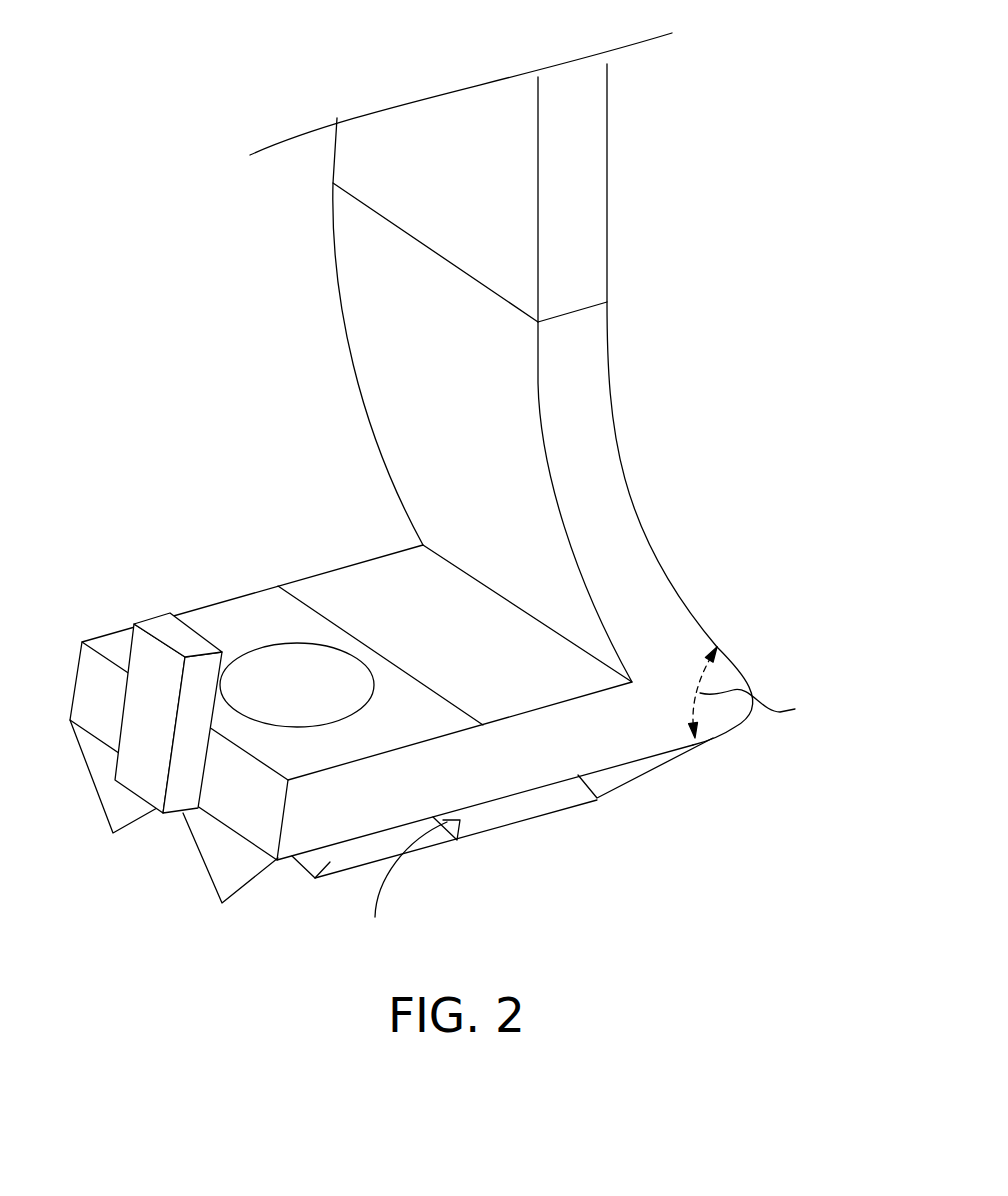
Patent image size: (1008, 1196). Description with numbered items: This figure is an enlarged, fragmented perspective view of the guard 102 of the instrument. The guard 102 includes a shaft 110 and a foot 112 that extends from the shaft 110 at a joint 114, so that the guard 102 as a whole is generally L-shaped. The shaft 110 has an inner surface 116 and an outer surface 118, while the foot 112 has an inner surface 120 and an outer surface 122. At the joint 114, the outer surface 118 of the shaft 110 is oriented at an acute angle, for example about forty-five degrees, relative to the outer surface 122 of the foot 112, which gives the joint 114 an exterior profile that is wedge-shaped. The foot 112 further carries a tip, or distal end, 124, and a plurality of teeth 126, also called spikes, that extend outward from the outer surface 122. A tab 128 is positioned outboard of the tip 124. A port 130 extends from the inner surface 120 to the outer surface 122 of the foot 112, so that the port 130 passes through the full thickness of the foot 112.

The guard 102 is at (461, 485).
The shaft 110 is at (440, 349).
The foot 112 is at (391, 716).
The joint 114 is at (750, 653).
The inner surface 116 is at (442, 150).
The outer surface 118 is at (607, 142).
The inner surface 120 is at (387, 573).
The outer surface 122 is at (572, 773).
The tip 124 is at (243, 792).
The teeth 126 is at (328, 862).
The tab 128 is at (167, 633).
The port 130 is at (283, 677).